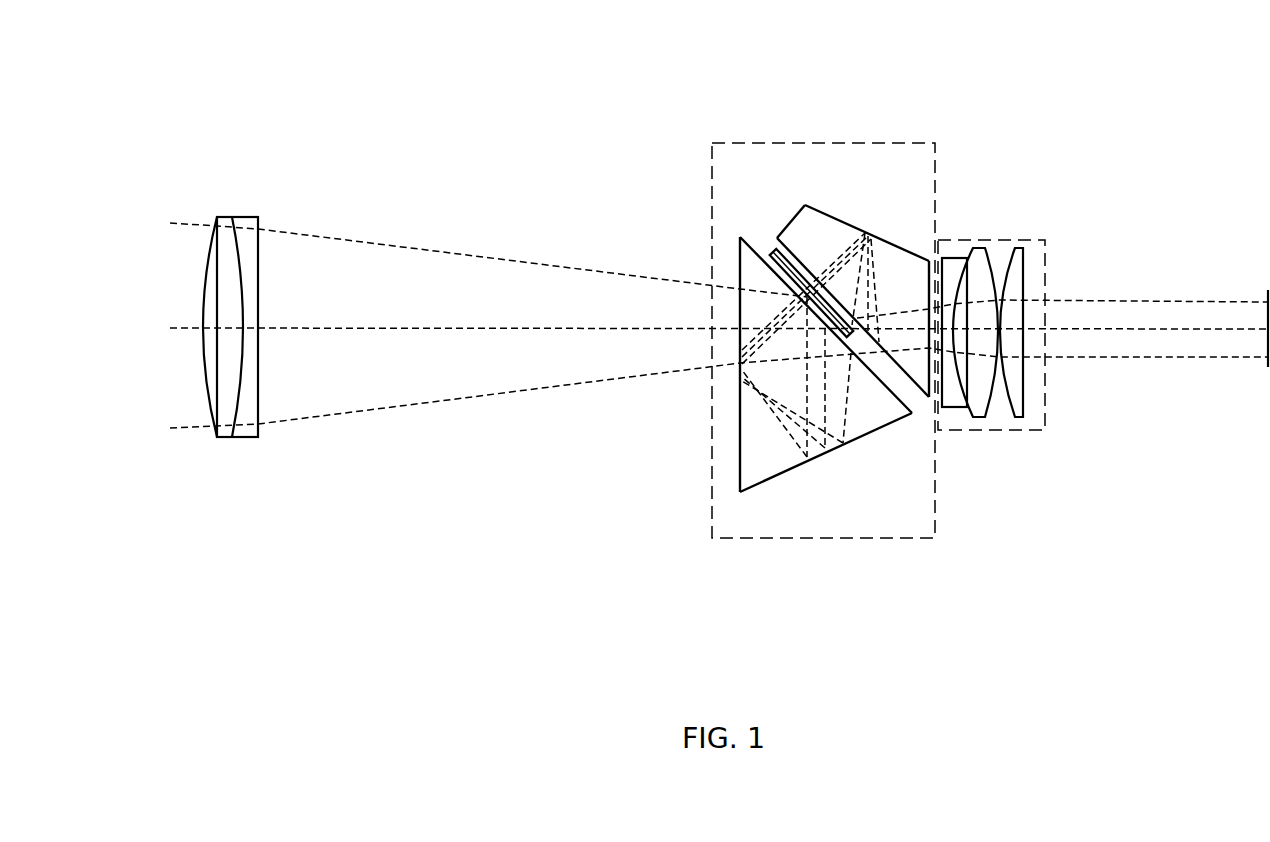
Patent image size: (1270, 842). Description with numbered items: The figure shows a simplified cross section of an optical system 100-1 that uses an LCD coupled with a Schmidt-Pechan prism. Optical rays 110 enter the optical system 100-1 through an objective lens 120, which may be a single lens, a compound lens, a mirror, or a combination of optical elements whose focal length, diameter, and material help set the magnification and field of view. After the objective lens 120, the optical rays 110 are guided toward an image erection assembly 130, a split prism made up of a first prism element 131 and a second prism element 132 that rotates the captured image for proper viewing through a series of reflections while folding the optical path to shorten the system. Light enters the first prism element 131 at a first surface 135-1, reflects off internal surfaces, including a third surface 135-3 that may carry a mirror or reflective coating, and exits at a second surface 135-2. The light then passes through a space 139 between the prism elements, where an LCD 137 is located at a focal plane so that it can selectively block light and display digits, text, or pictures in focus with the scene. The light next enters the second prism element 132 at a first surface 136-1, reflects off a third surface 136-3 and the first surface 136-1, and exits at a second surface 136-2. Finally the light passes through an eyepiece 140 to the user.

The optical system 100-1 is at (1122, 91).
The optical rays 110 is at (463, 253).
The objective lens 120 is at (232, 217).
The image erection assembly 130 is at (716, 143).
The first prism element 131 is at (778, 367).
The second prism element 132 is at (855, 278).
The first surface of the first prism element 135-1 is at (767, 466).
The second surface of the first prism element 135-2 is at (885, 403).
The third surface of the first prism element 135-3 is at (746, 436).
The first surface of the second prism element 136-1 is at (815, 259).
The second surface of the second prism element 136-2 is at (916, 293).
The third surface of the second prism element 136-3 is at (813, 222).
The LCD 137 is at (770, 250).
The space 139 is at (917, 402).
The eyepiece 140 is at (998, 240).